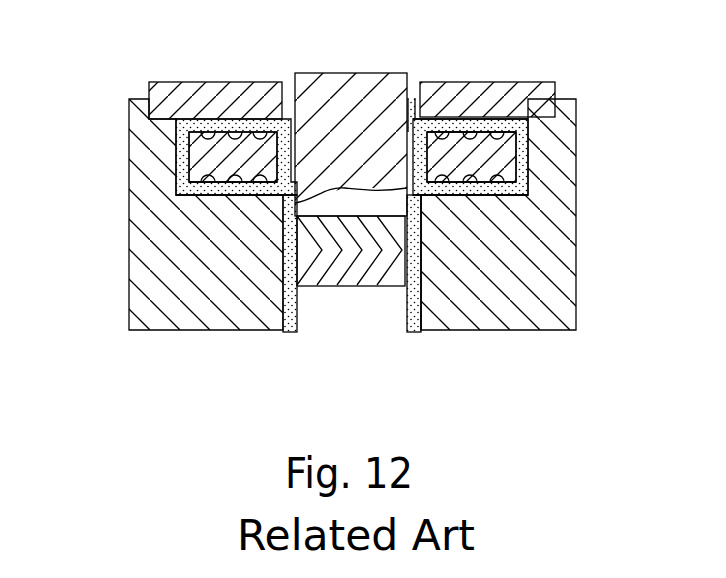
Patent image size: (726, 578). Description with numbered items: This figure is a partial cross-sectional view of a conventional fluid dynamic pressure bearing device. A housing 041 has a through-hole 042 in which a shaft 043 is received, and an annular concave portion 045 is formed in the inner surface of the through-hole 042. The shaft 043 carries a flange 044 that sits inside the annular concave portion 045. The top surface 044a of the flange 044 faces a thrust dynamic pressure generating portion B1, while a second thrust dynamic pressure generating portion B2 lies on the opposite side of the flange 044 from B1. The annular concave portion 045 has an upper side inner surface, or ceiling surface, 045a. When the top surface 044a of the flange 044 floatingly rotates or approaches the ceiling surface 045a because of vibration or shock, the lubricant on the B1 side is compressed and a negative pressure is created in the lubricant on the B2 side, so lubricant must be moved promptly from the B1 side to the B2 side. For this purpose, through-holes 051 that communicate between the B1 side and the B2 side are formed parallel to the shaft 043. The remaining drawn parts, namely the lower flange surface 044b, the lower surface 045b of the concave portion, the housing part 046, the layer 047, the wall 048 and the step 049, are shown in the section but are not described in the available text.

The housing 041 is at (142, 298).
The through-hole 042 is at (286, 322).
The shaft 043 is at (383, 319).
The flange 044 is at (203, 155).
The top surface 044a is at (176, 130).
The first bearing housing bottom wall 044b is at (200, 187).
The annular concave portion 045 is at (528, 150).
The upper side inner surface 045a is at (483, 118).
The second bearing housing bottom wall 045b is at (507, 190).
The second housing member 046 is at (465, 322).
The second sealing layer 047 is at (414, 90).
The second bearing housing top wall 048 is at (528, 132).
The support step 049 is at (495, 205).
The through-holes 051 is at (289, 130).
The thrust dynamic pressure generating portion B1 is at (240, 120).
The thrust dynamic pressure generating portion B2 is at (222, 197).